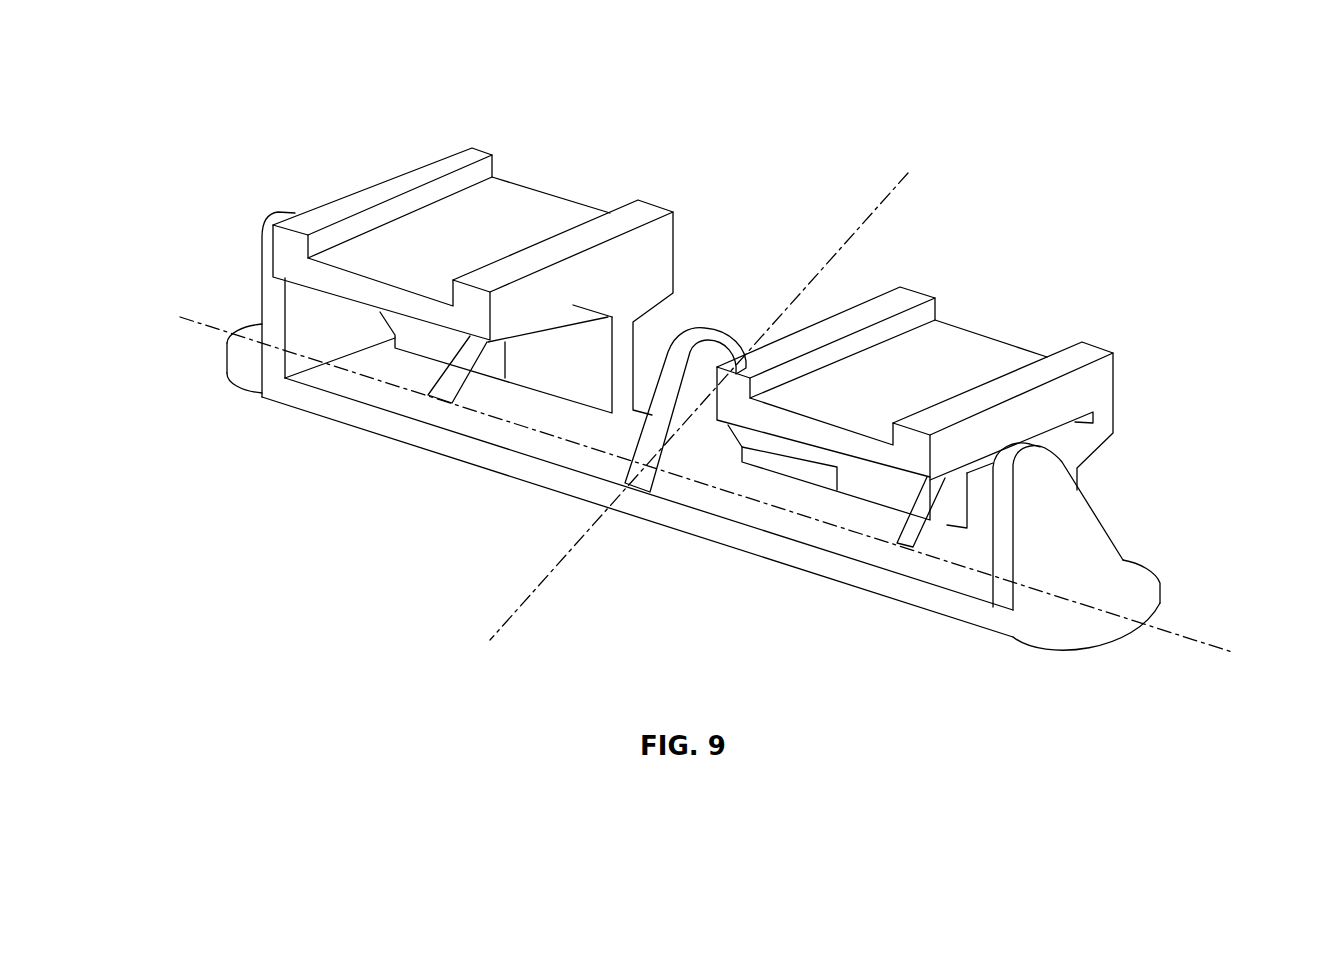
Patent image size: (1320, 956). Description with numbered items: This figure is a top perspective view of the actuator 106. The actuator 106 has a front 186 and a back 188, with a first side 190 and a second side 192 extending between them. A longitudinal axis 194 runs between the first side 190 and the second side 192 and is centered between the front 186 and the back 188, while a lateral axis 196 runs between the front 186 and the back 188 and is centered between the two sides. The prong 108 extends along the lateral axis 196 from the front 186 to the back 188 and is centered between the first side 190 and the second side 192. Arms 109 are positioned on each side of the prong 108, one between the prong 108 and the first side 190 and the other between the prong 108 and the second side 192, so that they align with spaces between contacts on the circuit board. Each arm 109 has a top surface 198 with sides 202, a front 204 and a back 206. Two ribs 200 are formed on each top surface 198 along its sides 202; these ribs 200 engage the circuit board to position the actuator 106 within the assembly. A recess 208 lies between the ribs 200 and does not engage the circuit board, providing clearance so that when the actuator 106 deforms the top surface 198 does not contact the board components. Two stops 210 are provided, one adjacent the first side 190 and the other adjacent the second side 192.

The actuator 106 is at (1128, 114).
The prong 108 is at (698, 338).
The arm 109 is at (528, 200).
The front 186 is at (568, 510).
The back 188 is at (790, 241).
The first side 190 is at (216, 366).
The second side 192 is at (1188, 623).
The longitudinal axis 194 is at (1193, 640).
The lateral axis 196 is at (894, 191).
The top surface 198 is at (438, 246).
The rib 200 is at (467, 157).
The side 202 is at (354, 188).
The front 204 is at (360, 282).
The back 206 is at (585, 202).
The recess 208 is at (502, 206).
The stop 210 is at (262, 290).